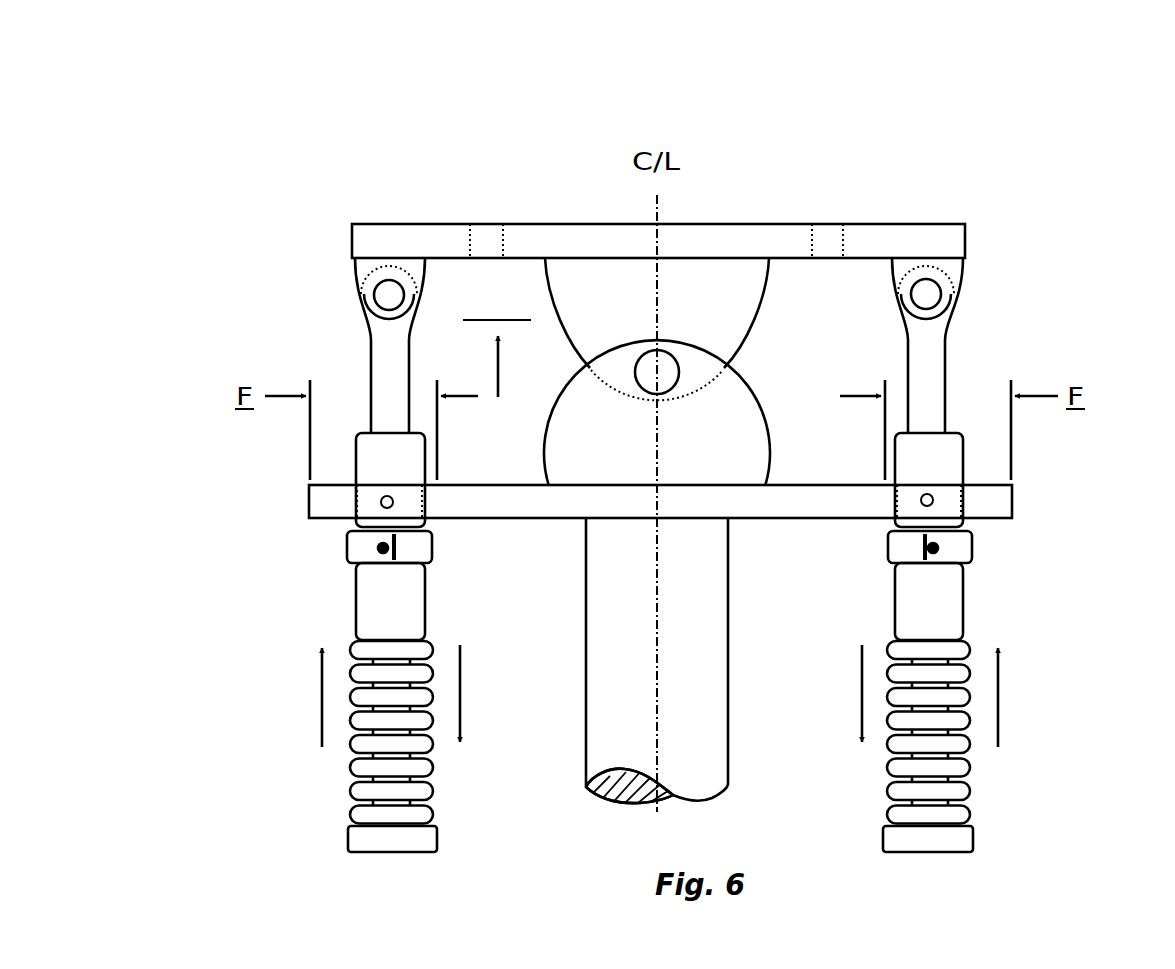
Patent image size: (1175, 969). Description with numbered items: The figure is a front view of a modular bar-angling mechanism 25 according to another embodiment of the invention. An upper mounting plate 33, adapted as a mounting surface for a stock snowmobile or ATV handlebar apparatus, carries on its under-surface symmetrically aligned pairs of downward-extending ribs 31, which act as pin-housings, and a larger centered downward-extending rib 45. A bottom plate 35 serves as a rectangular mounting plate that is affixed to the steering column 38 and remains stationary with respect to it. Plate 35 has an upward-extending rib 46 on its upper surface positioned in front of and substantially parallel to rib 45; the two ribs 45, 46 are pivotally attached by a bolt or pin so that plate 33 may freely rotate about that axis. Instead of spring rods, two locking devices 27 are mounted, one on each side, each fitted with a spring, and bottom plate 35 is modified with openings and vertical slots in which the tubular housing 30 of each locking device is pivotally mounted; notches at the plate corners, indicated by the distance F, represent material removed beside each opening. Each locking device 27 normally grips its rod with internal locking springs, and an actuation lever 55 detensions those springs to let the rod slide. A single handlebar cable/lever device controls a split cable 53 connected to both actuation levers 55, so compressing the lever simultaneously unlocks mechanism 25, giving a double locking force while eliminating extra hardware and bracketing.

The modular bar-angling mechanism 25 is at (801, 168).
The locking device 27 is at (328, 604).
The tubular housing 30 is at (965, 578).
The ribs 31 is at (355, 272).
The upper mounting plate 33 is at (430, 224).
The bottom plate 35 is at (560, 518).
The steering column 38 is at (562, 752).
The rib 45 is at (747, 347).
The rib 46 is at (748, 398).
The cable 53 is at (890, 543).
The actuation lever 55 is at (892, 546).